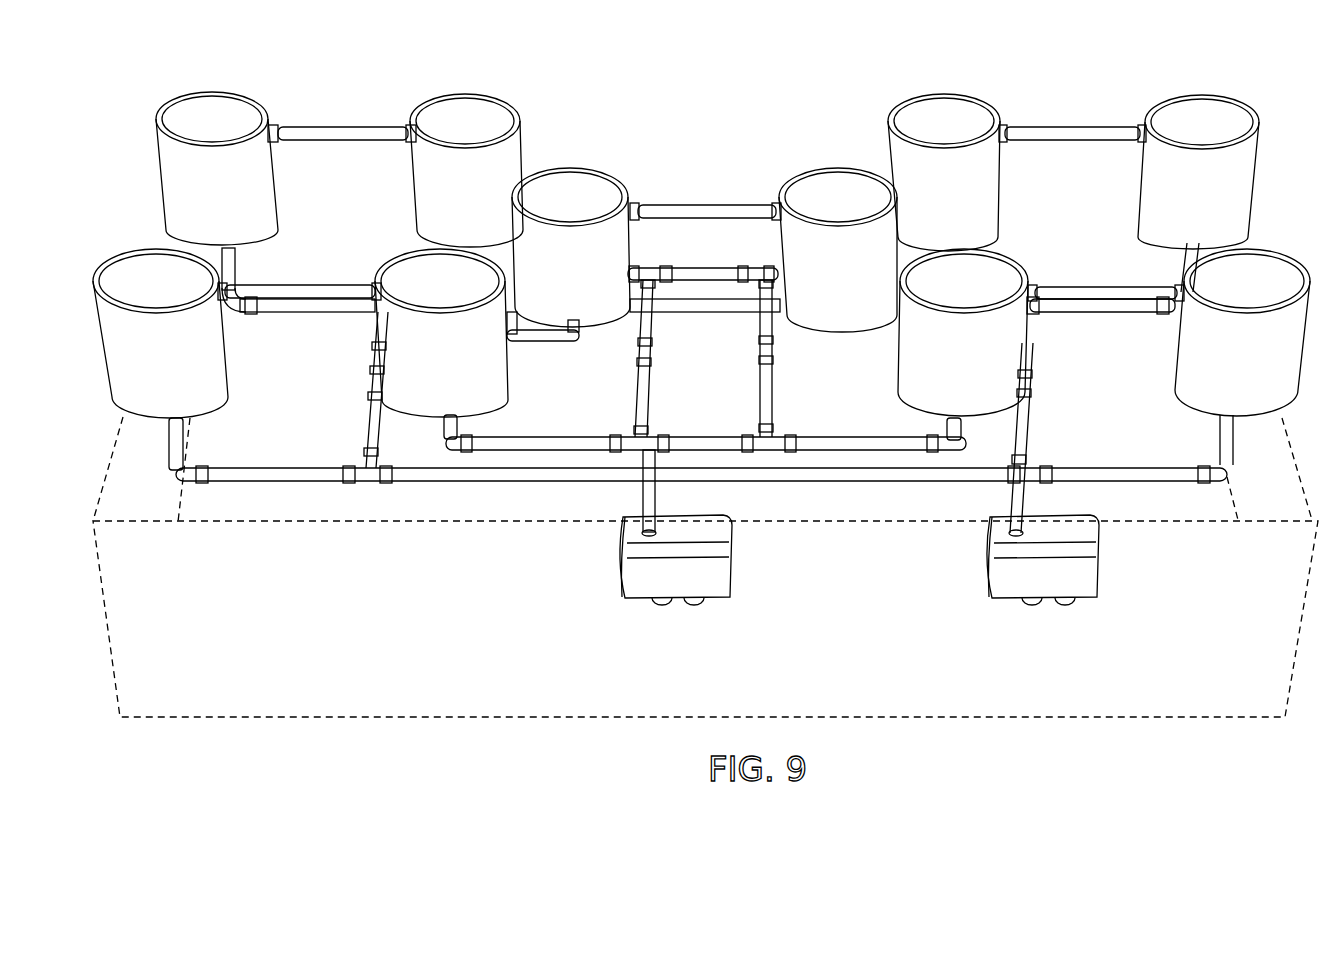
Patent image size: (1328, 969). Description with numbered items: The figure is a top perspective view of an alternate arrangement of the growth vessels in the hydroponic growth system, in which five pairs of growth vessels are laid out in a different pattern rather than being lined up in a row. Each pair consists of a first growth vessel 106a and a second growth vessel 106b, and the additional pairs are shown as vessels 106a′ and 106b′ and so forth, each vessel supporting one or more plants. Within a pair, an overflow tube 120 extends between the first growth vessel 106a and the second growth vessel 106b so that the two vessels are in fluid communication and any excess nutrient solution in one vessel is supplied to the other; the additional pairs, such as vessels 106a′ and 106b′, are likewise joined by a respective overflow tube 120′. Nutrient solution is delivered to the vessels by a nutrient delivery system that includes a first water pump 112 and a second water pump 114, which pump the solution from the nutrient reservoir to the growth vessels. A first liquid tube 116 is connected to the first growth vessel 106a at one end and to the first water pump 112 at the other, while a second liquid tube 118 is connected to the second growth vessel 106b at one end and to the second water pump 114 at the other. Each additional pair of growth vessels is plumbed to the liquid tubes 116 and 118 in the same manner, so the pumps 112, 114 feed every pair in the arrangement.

The second growth vessel 106b is at (207, 110).
The first growth vessel 106a is at (468, 112).
The second growth vessel of an additional pair 106b′ is at (152, 408).
The first growth vessel of an additional pair 106a′ is at (433, 405).
The overflow tube 120 is at (328, 130).
The overflow tube 120′ is at (707, 208).
The second liquid tube 118 is at (243, 470).
The first liquid tube 116 is at (537, 440).
The first water pump 112 is at (640, 590).
The second water pump 114 is at (1008, 590).